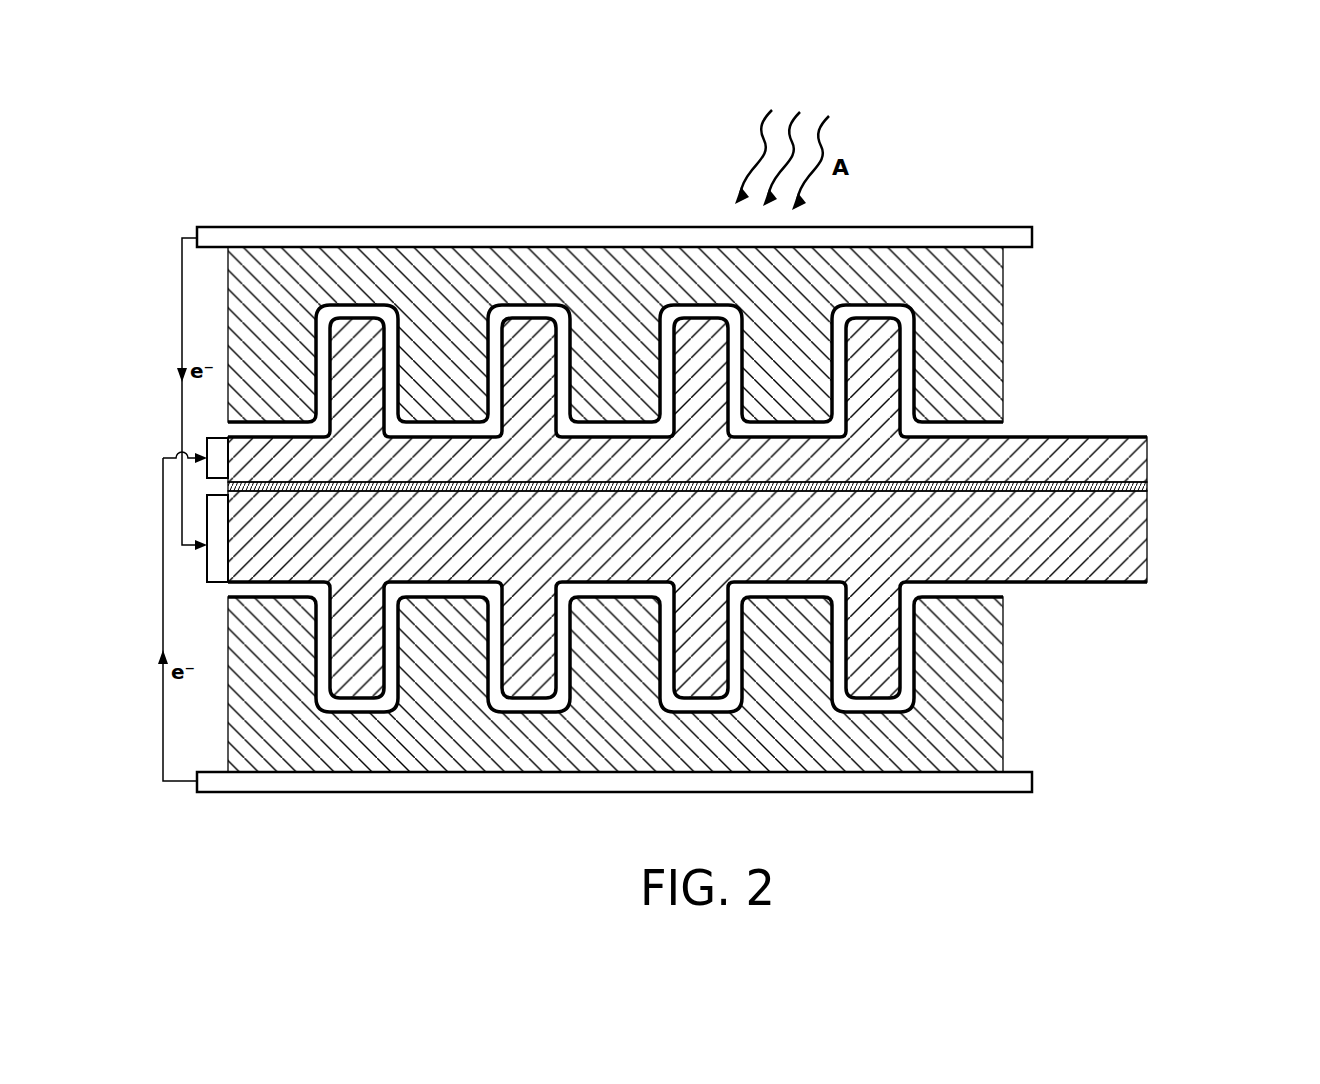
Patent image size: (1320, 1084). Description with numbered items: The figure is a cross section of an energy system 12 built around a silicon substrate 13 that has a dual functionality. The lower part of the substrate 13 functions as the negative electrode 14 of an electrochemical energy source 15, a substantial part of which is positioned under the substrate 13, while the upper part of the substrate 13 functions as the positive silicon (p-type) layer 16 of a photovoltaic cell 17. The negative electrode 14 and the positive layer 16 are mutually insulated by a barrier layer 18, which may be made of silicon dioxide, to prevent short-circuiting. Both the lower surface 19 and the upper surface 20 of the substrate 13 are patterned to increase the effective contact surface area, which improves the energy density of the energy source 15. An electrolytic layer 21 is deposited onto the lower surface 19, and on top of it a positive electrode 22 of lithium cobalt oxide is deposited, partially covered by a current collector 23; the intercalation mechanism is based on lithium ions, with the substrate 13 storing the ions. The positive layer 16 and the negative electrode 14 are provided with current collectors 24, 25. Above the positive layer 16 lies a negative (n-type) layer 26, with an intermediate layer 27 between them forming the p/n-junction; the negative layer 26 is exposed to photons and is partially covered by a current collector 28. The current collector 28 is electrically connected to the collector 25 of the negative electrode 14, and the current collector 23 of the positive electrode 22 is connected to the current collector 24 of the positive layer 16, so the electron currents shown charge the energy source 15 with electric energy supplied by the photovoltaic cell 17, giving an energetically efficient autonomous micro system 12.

The energy system 12 is at (1171, 279).
The silicon substrate 13 is at (1240, 480).
The negative electrode 14 is at (1140, 537).
The electrochemical energy source 15 is at (1191, 665).
The positive silicon layer 16 is at (1133, 452).
The photovoltaic cell 17 is at (1058, 263).
The barrier layer 18 is at (1150, 487).
The lower surface 19 is at (1085, 583).
The upper surface 20 is at (1085, 434).
The electrolytic layer 21 is at (240, 589).
The positive electrode 22 is at (993, 745).
The current collector 23 is at (956, 780).
The current collector 24 is at (220, 462).
The current collector 25 is at (220, 543).
The negative layer 26 is at (993, 298).
The intermediate layer 27 is at (240, 430).
The current collector 28 is at (936, 237).